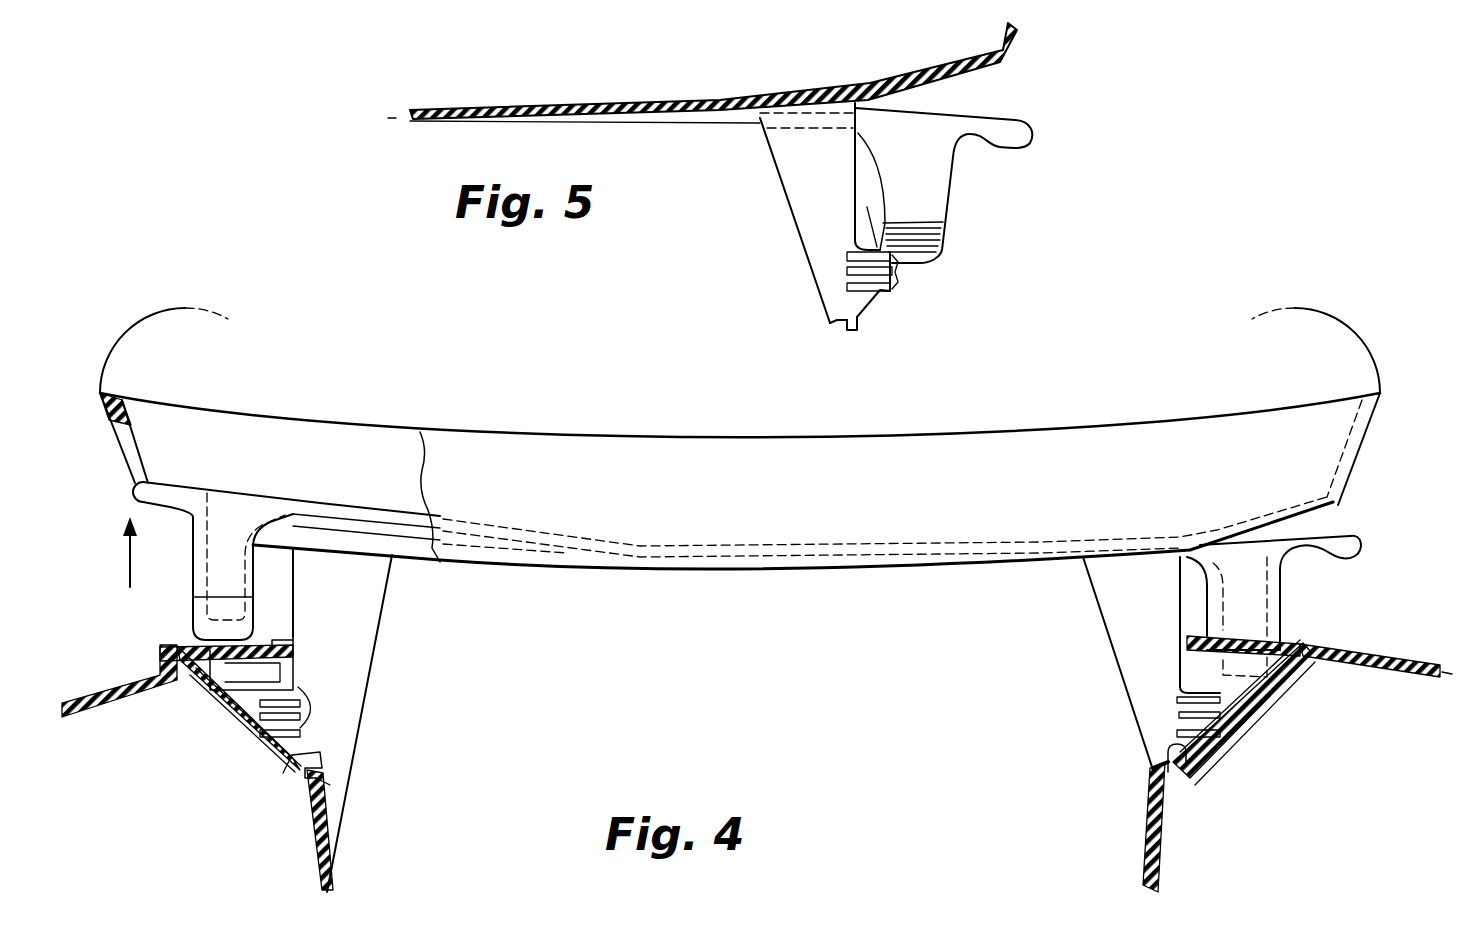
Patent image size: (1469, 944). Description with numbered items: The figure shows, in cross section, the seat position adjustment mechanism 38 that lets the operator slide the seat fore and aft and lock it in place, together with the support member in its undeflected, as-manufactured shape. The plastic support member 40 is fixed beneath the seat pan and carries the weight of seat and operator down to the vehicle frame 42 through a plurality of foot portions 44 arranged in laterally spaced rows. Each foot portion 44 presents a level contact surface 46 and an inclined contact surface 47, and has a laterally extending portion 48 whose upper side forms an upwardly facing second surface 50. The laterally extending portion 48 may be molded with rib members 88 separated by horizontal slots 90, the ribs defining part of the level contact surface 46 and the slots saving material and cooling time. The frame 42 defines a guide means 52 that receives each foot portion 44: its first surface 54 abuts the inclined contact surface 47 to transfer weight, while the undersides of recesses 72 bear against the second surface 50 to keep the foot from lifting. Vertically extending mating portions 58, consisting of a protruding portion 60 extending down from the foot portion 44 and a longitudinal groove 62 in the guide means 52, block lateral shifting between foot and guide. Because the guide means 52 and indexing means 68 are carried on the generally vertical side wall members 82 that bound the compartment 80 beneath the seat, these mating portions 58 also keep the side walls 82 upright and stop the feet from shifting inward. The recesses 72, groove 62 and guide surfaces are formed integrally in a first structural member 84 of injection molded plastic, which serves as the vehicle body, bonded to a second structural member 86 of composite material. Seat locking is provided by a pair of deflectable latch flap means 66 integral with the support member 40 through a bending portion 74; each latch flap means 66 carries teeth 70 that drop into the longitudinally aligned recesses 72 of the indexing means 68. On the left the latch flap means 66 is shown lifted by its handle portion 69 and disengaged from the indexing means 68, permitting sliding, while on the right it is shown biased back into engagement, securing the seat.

In FIG. 4, the seat position adjustment mechanism 38 is at (105, 583).
In FIG. 5, the support member 40 is at (780, 95).
In FIG. 4, the support member 40 is at (547, 565).
In FIG. 4, the frame 42 is at (342, 866).
In FIG. 5, the foot portion 44 is at (800, 250).
In FIG. 4, the foot portion 44 is at (380, 635).
In FIG. 5, the level contact surface 46 is at (828, 326).
In FIG. 5, the inclined contact surface 47 is at (870, 310).
In FIG. 4, the inclined contact surface 47 is at (330, 787).
In FIG. 5, the laterally extending portion 48 is at (877, 237).
In FIG. 5, the second surface 50 is at (868, 236).
In FIG. 4, the guide means 52 is at (372, 733).
In FIG. 4, the first surface of guide means 54 is at (295, 752).
In FIG. 4, the mating portions 58 is at (298, 818).
In FIG. 5, the protruding portion 60 is at (853, 333).
In FIG. 4, the protruding portion 60 is at (283, 773).
In FIG. 4, the groove 62 is at (323, 757).
In FIG. 5, the latch flap means 66 is at (1035, 140).
In FIG. 4, the latch flap means 66 is at (305, 502).
In FIG. 4, the indexing means 68 is at (196, 640).
In FIG. 4, the handle portion 69 is at (120, 482).
In FIG. 5, the teeth 70 is at (943, 233).
In FIG. 4, the teeth 70 is at (193, 610).
In FIG. 4, the recesses 72 is at (283, 680).
In FIG. 5, the bending portion 74 is at (605, 100).
In FIG. 4, the bending portion 74 is at (598, 540).
In FIG. 4, the compartment 80 is at (1253, 712).
In FIG. 4, the side wall members 82 is at (337, 833).
In FIG. 4, the first structural member 84 is at (98, 712).
In FIG. 4, the second structural member 86 is at (213, 687).
In FIG. 5, the rib members 88 is at (897, 253).
In FIG. 4, the rib members 88 is at (297, 697).
In FIG. 5, the slots 90 is at (847, 286).
In FIG. 4, the slots 90 is at (252, 737).